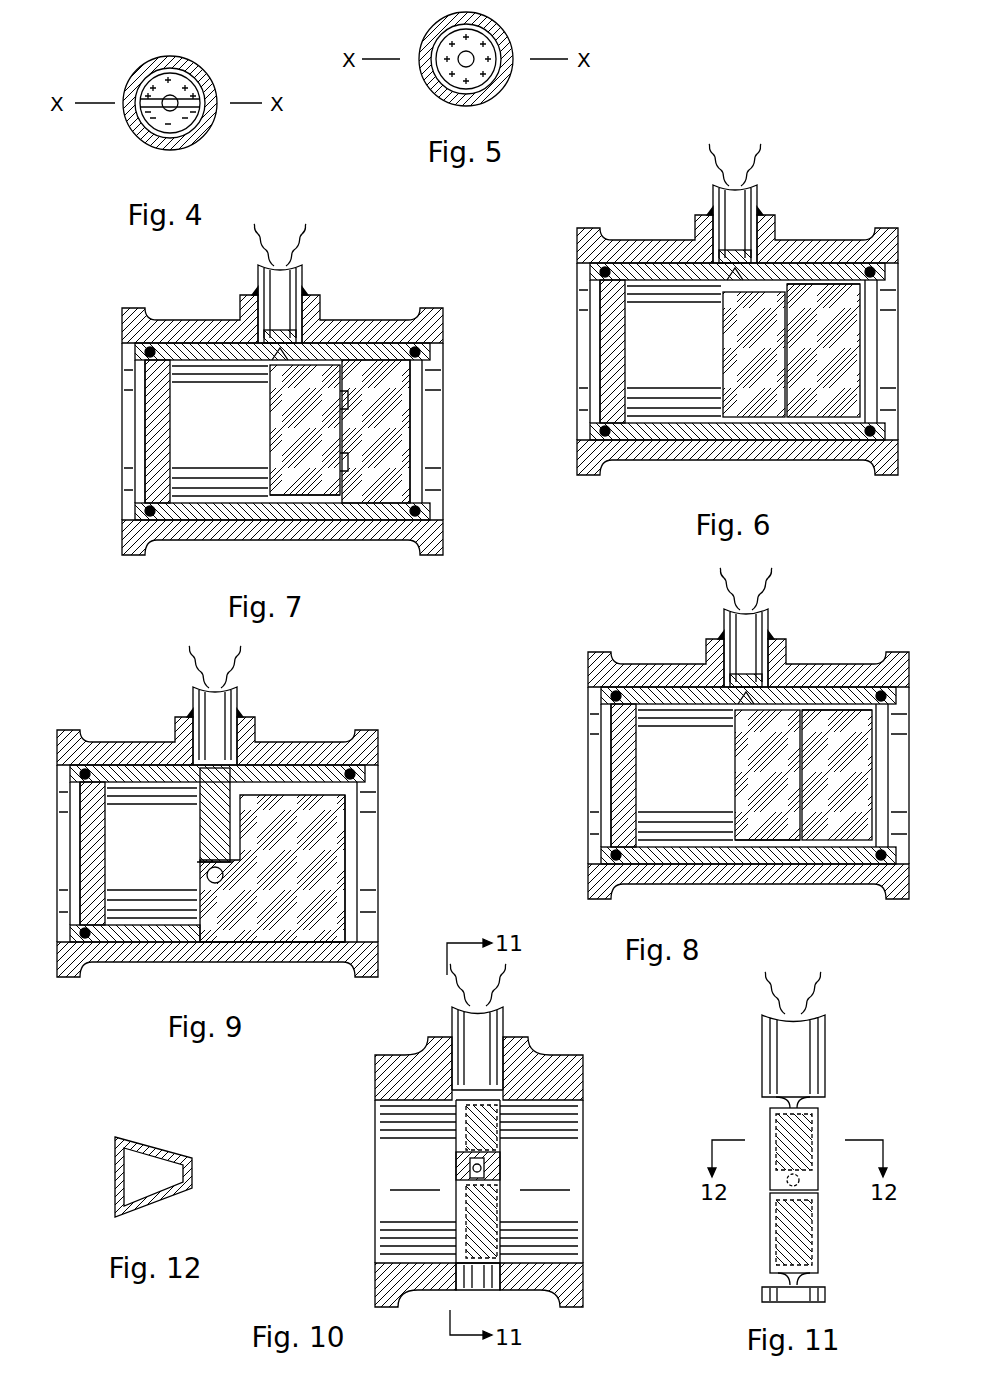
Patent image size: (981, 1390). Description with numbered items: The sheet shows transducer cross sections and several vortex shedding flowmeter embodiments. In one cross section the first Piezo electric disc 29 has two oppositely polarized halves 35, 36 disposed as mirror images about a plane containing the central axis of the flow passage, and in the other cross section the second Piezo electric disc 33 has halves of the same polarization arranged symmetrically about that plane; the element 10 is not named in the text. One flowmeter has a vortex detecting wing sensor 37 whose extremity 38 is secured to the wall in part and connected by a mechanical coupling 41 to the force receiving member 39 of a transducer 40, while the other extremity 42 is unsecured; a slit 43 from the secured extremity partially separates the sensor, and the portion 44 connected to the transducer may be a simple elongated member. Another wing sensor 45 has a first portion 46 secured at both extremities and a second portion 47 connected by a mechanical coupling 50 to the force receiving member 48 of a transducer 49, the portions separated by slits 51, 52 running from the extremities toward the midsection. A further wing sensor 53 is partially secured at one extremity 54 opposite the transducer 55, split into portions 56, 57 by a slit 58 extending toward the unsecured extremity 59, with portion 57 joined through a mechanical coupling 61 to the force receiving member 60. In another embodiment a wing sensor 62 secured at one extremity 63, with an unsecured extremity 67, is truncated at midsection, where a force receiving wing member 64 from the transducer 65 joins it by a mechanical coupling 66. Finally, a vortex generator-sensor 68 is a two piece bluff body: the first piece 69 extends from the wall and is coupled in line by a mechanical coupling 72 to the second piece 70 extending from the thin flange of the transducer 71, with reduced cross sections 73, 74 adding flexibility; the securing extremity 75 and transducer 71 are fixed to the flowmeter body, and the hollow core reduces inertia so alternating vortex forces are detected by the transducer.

In FIG. 4, the fluid dispensing valve unit 10 is at (140, 80).
In FIG. 5, the fluid dispensing valve unit 10 is at (510, 55).
In FIG. 4, the first Piezo electric disc 29 is at (200, 103).
In FIG. 5, the second Piezo electric disc 33 is at (445, 50).
In FIG. 4, the polarized half of first Piezo electric disc 35 is at (180, 66).
In FIG. 4, the polarized half of first Piezo electric disc 36 is at (150, 128).
In FIG. 6, the vortex detecting wing sensor 37 is at (845, 320).
In FIG. 6, the secured extremity 38 is at (808, 277).
In FIG. 6, the force receiving member 39 is at (727, 264).
In FIG. 6, the transducer 40 is at (735, 212).
In FIG. 6, the mechanical coupling 41 is at (707, 290).
In FIG. 6, the unsecured extremity 42 is at (820, 405).
In FIG. 6, the slit 43 is at (780, 340).
In FIG. 6, the portion of the wing sensor connected to the transducer 44 is at (752, 322).
In FIG. 7, the wing sensor 45 is at (390, 438).
In FIG. 7, the first portion of wing sensor 46 is at (385, 412).
In FIG. 7, the second portion of wing sensor 47 is at (293, 432).
In FIG. 7, the force receiving member 48 is at (268, 352).
In FIG. 7, the transducer 49 is at (282, 292).
In FIG. 7, the mechanical coupling 50 is at (237, 402).
In FIG. 7, the slit 51 is at (342, 400).
In FIG. 7, the slit 52 is at (348, 470).
In FIG. 8, the wing sensor 53 is at (805, 707).
In FIG. 8, the partially secured extremity 54 is at (830, 844).
In FIG. 8, the transducer 55 is at (745, 632).
In FIG. 8, the portion of wing sensor 56 is at (860, 742).
In FIG. 8, the portion of wing sensor 57 is at (760, 780).
In FIG. 8, the slit 58 is at (800, 737).
In FIG. 8, the unsecured extremity 59 is at (845, 767).
In FIG. 8, the force receiving member 60 is at (745, 674).
In FIG. 8, the mechanical coupling 61 is at (735, 707).
In FIG. 9, the wing sensor 62 is at (300, 870).
In FIG. 9, the secured extremity 63 is at (265, 928).
In FIG. 9, the force receiving wing member 64 is at (210, 822).
In FIG. 9, the transducer 65 is at (220, 714).
In FIG. 9, the mechanical coupling 66 is at (215, 877).
In FIG. 9, the unsecured extremity 67 is at (290, 800).
In FIG. 10, the vortex generator-sensor 68 is at (480, 1170).
In FIG. 12, the vortex generator-sensor 68 is at (165, 1152).
In FIG. 10, the first piece 69 is at (478, 1222).
In FIG. 11, the first piece 69 is at (785, 1232).
In FIG. 10, the second piece 70 is at (480, 1122).
In FIG. 11, the second piece 70 is at (790, 1142).
In FIG. 10, the transducer 71 is at (478, 1039).
In FIG. 11, the transducer 71 is at (795, 1062).
In FIG. 10, the mechanical coupling 72 is at (490, 1164).
In FIG. 11, the mechanical coupling 72 is at (800, 1182).
In FIG. 10, the section of reduced cross section area 73 is at (480, 1280).
In FIG. 11, the section of reduced cross section area 73 is at (778, 1280).
In FIG. 10, the section of reduced cross section area 74 is at (470, 1087).
In FIG. 11, the section of reduced cross section area 74 is at (800, 1104).
In FIG. 11, the securing extremity 75 is at (800, 1304).